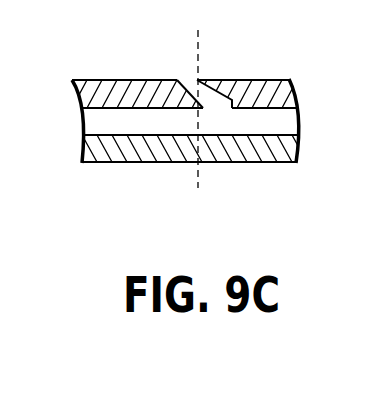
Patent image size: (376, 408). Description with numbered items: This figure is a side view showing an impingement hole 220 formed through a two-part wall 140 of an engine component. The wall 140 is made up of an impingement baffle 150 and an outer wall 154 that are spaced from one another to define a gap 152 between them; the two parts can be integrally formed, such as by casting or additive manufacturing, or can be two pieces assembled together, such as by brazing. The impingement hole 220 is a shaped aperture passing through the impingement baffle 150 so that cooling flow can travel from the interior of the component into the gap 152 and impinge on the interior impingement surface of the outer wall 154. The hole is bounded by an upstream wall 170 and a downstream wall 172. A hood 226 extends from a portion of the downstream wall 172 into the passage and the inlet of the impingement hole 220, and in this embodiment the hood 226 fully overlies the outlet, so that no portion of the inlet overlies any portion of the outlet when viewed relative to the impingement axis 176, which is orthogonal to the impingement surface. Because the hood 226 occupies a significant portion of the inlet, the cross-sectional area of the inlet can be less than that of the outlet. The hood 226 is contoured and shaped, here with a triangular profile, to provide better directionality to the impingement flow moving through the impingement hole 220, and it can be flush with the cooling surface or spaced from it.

The wall 140 is at (66, 80).
The impingement baffle 150 is at (307, 82).
The gap 152 is at (307, 109).
The outer wall 154 is at (307, 136).
The upstream wall 170 is at (177, 80).
The downstream wall 172 is at (232, 101).
The impingement axis 176 is at (197, 168).
The impingement hole 220 is at (186, 75).
The hood 226 is at (213, 86).